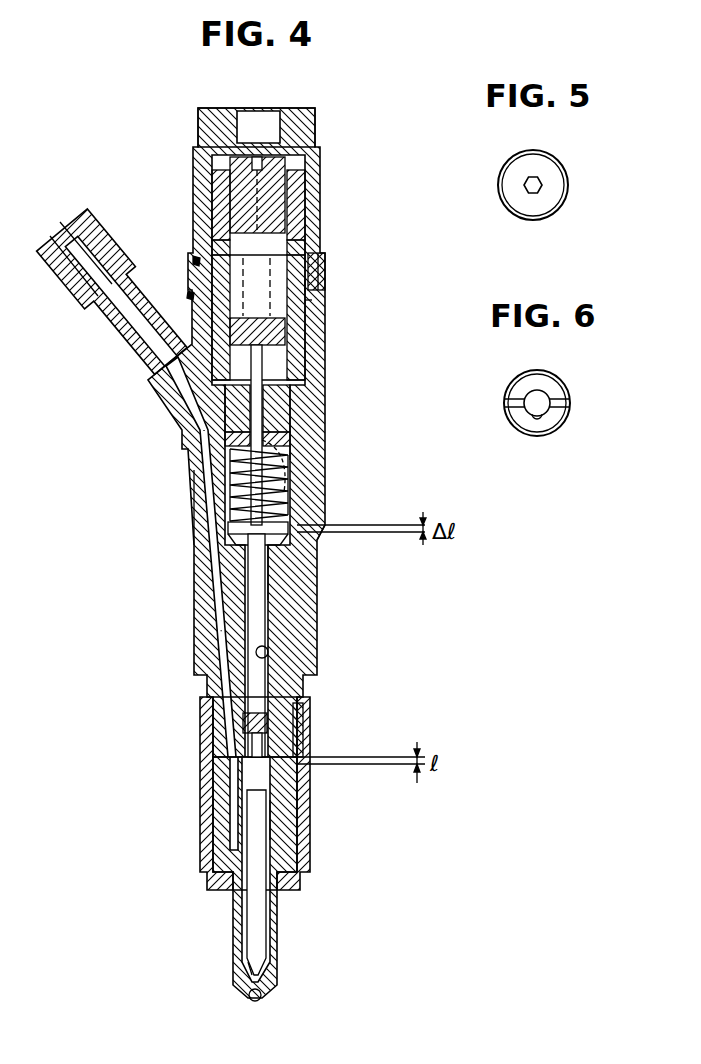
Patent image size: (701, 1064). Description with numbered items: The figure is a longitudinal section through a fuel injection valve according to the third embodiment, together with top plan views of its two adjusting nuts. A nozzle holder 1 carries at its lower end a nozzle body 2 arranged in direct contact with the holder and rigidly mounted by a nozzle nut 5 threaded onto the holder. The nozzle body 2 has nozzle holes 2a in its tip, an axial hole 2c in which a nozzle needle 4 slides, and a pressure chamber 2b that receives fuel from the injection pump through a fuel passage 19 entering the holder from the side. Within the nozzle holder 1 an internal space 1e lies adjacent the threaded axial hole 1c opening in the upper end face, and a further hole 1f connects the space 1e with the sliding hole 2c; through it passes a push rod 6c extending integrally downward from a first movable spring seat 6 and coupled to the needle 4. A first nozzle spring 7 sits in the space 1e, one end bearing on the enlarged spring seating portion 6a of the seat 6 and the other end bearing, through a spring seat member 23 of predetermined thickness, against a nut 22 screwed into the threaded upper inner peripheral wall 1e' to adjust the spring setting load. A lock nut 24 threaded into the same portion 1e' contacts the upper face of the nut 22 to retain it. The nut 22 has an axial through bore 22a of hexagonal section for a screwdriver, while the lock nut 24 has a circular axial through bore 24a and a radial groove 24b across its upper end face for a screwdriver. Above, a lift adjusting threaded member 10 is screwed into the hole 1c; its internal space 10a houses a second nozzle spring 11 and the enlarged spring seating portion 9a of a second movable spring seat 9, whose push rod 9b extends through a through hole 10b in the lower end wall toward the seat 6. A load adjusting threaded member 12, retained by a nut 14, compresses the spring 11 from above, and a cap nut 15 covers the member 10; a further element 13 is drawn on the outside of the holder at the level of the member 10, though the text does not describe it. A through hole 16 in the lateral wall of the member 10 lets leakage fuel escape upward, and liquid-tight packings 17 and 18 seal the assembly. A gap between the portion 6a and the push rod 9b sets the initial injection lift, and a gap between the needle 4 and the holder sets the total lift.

In FIG. 4, the nozzle holder 1 is at (300, 625).
In FIG. 4, the axial hole 1c is at (306, 305).
In FIG. 4, the internal space 1e is at (299, 522).
In FIG. 4, the threaded upper inner peripheral wall 1e' is at (333, 442).
In FIG. 4, the hole 1f is at (280, 662).
In FIG. 4, the nozzle body 2 is at (286, 850).
In FIG. 4, the nozzle holes 2a is at (262, 999).
In FIG. 4, the pressure chamber 2b is at (290, 882).
In FIG. 4, the axial hole 2c is at (278, 824).
In FIG. 4, the nozzle needle 4 is at (259, 932).
In FIG. 4, the nozzle nut 5 is at (301, 892).
In FIG. 4, the first movable spring seat 6 is at (223, 575).
In FIG. 4, the enlarged spring seating portion 6a is at (286, 586).
In FIG. 4, the push rod 6c is at (263, 598).
In FIG. 4, the first nozzle spring 7 is at (276, 470).
In FIG. 4, the second movable spring seat 9 is at (190, 422).
In FIG. 4, the enlarged spring seating portion 9a is at (284, 338).
In FIG. 4, the push rod 9b is at (318, 548).
In FIG. 4, the lift adjusting threaded member 10 is at (296, 325).
In FIG. 4, the internal space 10a is at (308, 288).
In FIG. 4, the through hole 10b is at (300, 381).
In FIG. 4, the second nozzle spring 11 is at (305, 246).
In FIG. 4, the load adjusting threaded member 12 is at (296, 160).
In FIG. 4, the lock nut 13 is at (325, 270).
In FIG. 4, the nut 14 is at (300, 190).
In FIG. 4, the cap nut 15 is at (316, 110).
In FIG. 4, the through hole 16 is at (197, 262).
In FIG. 4, the liquid-tight packing 17 is at (190, 296).
In FIG. 4, the liquid-tight packing 18 is at (318, 256).
In FIG. 4, the fuel passage 19 is at (93, 256).
In FIG. 4, the nut 22 is at (291, 438).
In FIG. 5, the nut 22 is at (545, 166).
In FIG. 4, the axial through bore 22a is at (285, 491).
In FIG. 5, the axial through bore 22a is at (542, 186).
In FIG. 4, the spring seat member 23 is at (193, 473).
In FIG. 4, the lock nut 24 is at (292, 406).
In FIG. 6, the lock nut 24 is at (548, 383).
In FIG. 6, the axial through bore 24a is at (540, 418).
In FIG. 6, the radial groove 24b is at (570, 404).